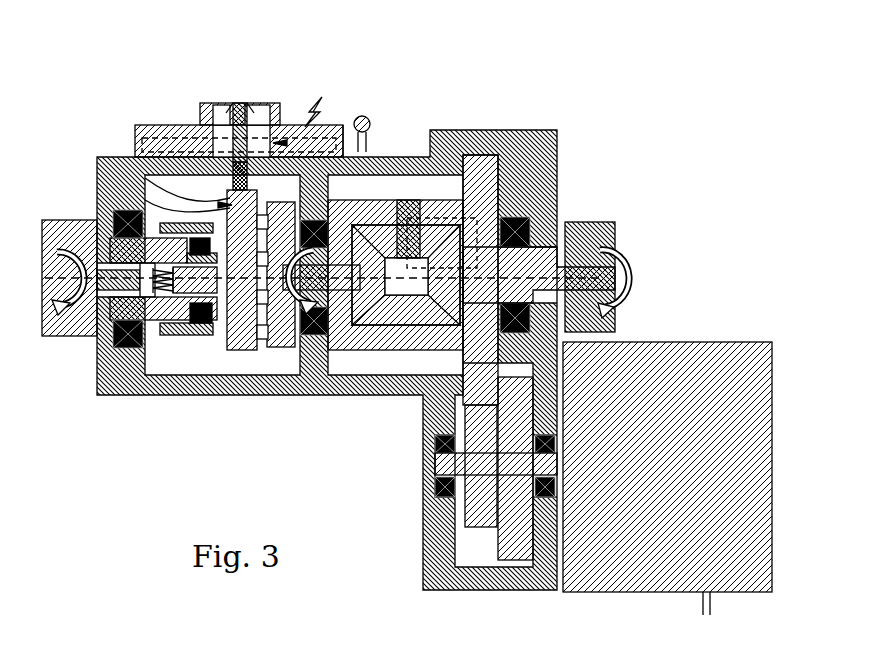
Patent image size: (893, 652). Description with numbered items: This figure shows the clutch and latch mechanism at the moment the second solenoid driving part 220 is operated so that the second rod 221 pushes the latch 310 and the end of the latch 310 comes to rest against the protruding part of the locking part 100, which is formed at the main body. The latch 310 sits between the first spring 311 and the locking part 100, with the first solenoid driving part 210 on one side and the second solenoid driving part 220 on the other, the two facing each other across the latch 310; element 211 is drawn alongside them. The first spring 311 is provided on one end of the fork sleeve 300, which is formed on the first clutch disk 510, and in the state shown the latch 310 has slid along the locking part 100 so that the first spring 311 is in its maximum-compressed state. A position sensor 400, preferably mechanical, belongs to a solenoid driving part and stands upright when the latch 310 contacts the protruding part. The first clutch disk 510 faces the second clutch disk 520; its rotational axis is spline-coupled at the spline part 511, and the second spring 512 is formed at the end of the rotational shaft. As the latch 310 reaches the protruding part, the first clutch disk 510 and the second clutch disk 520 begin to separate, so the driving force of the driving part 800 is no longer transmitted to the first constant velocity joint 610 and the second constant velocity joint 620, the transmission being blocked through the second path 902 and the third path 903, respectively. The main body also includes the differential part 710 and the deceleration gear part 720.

The locking part 100 is at (273, 101).
The first solenoid driving part 210 is at (227, 105).
The actuator block 211 is at (228, 103).
The second solenoid driving part 220 is at (343, 125).
The second rod 221 is at (312, 118).
The fork sleeve 300 is at (120, 168).
The latch 310 is at (250, 104).
The first spring 311 is at (155, 130).
The position sensor 400 is at (383, 130).
The first clutch disk 510 is at (242, 350).
The spline part 511 is at (166, 348).
The second spring 512 is at (163, 330).
The second clutch disk 520 is at (286, 340).
The first constant velocity joint 610 is at (93, 261).
The second constant velocity joint 620 is at (604, 203).
The differential part 710 is at (330, 224).
The deceleration gear part 720 is at (473, 510).
The driving part 800 is at (715, 342).
The second path 902 is at (53, 333).
The third path 903 is at (560, 220).